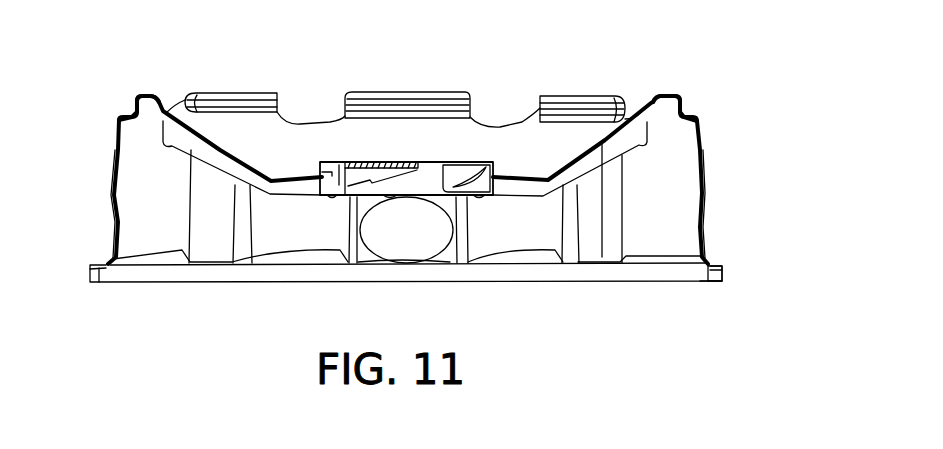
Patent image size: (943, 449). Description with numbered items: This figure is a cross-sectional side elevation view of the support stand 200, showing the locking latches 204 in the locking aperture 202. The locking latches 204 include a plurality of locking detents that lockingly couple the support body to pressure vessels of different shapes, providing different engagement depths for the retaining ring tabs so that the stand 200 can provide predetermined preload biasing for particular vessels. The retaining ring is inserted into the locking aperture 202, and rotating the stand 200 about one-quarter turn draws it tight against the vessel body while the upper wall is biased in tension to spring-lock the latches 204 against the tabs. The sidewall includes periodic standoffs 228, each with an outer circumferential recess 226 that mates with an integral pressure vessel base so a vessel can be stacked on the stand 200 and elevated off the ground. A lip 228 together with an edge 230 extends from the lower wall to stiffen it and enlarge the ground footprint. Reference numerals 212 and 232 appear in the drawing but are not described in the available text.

The support stand 200 is at (716, 106).
The locking aperture 202 is at (441, 158).
The locking latches 204 is at (358, 162).
The side wall / port 212 is at (112, 218).
The outer circumferential recess 226 is at (133, 109).
The standoffs 228 is at (153, 99).
The edge 230 is at (723, 275).
The bottom edge 232 is at (712, 283).